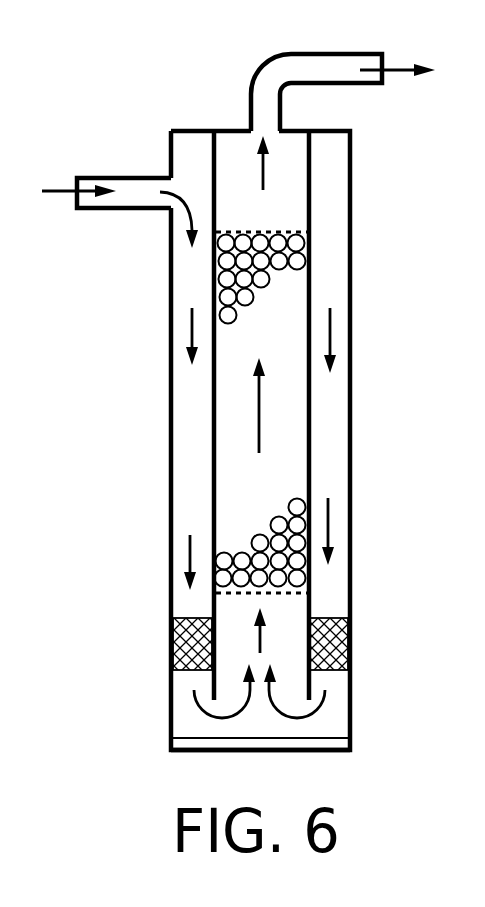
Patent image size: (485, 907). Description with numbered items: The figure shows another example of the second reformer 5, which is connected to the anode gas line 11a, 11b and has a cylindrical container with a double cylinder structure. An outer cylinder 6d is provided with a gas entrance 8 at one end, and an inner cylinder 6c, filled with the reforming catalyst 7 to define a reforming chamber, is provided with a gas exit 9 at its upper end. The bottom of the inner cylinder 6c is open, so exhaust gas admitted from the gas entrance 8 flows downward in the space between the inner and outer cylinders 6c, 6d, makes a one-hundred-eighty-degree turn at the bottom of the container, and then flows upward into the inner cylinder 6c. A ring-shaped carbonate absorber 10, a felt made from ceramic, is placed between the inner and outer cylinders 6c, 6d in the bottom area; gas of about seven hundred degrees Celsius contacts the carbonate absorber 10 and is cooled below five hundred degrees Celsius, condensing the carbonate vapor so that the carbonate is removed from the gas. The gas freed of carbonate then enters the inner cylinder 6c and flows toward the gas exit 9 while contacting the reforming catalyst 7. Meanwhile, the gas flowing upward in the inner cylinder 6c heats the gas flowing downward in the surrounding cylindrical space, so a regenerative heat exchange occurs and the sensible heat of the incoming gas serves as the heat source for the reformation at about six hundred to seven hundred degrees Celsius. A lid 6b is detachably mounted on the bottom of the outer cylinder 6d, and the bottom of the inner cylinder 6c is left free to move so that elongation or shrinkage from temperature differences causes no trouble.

The second reformer 5 is at (198, 108).
The lid 6b is at (333, 745).
The inner cylinder 6c is at (210, 389).
The outer cylinder 6d is at (170, 297).
The reforming catalyst 7 is at (297, 262).
The gas entrance 8 is at (140, 177).
The gas exit 9 is at (313, 50).
The carbonate absorber 10 is at (172, 650).
The anode gas line 11a is at (50, 185).
The anode gas line 11b is at (397, 68).